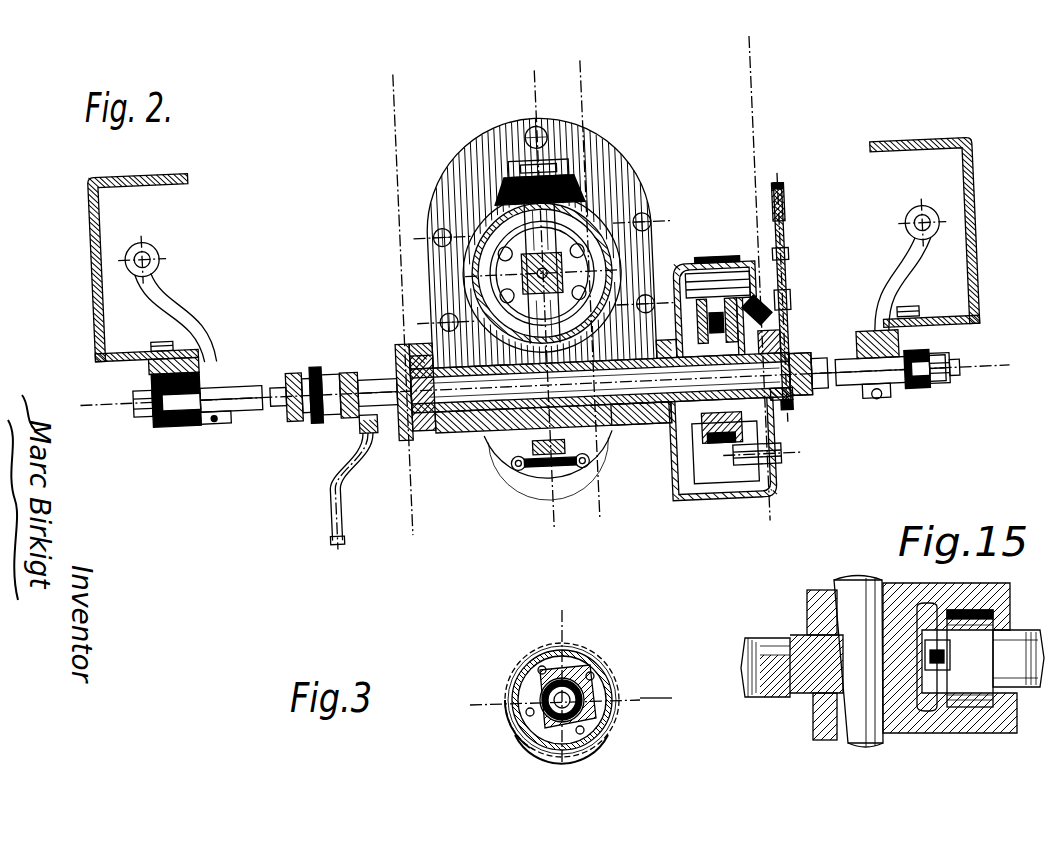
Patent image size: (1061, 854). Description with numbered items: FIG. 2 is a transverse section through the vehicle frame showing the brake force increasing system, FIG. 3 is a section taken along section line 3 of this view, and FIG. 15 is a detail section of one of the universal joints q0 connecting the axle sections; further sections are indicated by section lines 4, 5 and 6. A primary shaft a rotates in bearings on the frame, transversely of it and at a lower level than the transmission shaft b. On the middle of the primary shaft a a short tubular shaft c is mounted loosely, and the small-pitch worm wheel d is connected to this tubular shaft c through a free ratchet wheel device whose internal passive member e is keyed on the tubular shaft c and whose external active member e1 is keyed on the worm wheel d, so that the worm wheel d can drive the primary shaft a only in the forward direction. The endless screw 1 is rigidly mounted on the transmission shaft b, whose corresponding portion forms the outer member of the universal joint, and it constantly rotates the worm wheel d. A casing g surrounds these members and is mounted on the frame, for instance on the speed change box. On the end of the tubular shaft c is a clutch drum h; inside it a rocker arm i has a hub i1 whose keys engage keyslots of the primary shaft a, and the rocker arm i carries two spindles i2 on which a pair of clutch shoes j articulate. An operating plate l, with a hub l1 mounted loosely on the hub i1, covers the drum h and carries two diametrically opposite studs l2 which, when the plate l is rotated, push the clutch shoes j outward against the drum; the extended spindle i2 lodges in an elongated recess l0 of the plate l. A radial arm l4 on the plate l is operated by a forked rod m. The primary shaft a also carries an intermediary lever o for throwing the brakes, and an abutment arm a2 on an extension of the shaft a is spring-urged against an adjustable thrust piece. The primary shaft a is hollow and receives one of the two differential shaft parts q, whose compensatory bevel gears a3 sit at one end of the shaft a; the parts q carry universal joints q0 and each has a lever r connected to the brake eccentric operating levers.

In FIG. 2, the endless screw 1 is at (487, 225).
In FIG. 2, the section line 3— 3 is at (617, 72).
In FIG. 2, the section line 4— 4 is at (790, 60).
In FIG. 2, the section line 5— 5 is at (490, 73).
In FIG. 2, the section line 6— 6 is at (353, 82).
In FIG. 2, the primary shaft a is at (672, 470).
In FIG. 3, the primary shaft a is at (610, 717).
In FIG. 2, the abutment arm a2 is at (808, 400).
In FIG. 2, the compensatory bevel gears a3 is at (395, 365).
In FIG. 2, the transmission shaft b is at (577, 222).
In FIG. 2, the tubular shaft c is at (655, 440).
In FIG. 3, the tubular shaft c is at (543, 730).
In FIG. 2, the worm wheel d is at (415, 335).
In FIG. 3, the worm wheel d is at (525, 655).
In FIG. 2, the internal passive member e is at (613, 433).
In FIG. 3, the internal passive member e is at (615, 705).
In FIG. 2, the external active member e1 is at (512, 458).
In FIG. 3, the external active member e1 is at (538, 660).
In FIG. 2, the casing g is at (425, 345).
In FIG. 2, the clutch drum h is at (690, 270).
In FIG. 2, the rocker arm i is at (662, 295).
In FIG. 2, the hub of rocker arm i1 is at (772, 347).
In FIG. 2, the spindles i2 is at (740, 270).
In FIG. 2, the clutch shoes j is at (783, 265).
In FIG. 2, the operating plate l is at (797, 420).
In FIG. 2, the elongated recess l0 is at (775, 192).
In FIG. 2, the hub of operating plate l1 is at (790, 320).
In FIG. 2, the studs l2 is at (720, 452).
In FIG. 2, the arm l4 is at (788, 408).
In FIG. 2, the rod m is at (765, 308).
In FIG. 2, the intermediary lever o is at (330, 505).
In FIG. 2, the differential shaft parts q is at (250, 395).
In FIG. 3, the differential shaft parts q is at (590, 660).
In FIG. 15, the differential shaft parts q is at (1013, 648).
In FIG. 2, the universal joints q0 is at (290, 422).
In FIG. 15, the universal joints q0 is at (807, 600).
In FIG. 2, the lever r is at (170, 310).